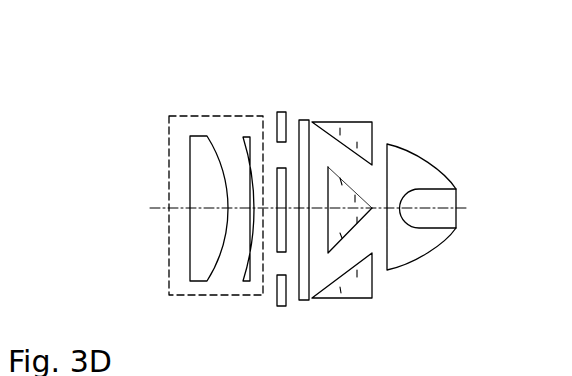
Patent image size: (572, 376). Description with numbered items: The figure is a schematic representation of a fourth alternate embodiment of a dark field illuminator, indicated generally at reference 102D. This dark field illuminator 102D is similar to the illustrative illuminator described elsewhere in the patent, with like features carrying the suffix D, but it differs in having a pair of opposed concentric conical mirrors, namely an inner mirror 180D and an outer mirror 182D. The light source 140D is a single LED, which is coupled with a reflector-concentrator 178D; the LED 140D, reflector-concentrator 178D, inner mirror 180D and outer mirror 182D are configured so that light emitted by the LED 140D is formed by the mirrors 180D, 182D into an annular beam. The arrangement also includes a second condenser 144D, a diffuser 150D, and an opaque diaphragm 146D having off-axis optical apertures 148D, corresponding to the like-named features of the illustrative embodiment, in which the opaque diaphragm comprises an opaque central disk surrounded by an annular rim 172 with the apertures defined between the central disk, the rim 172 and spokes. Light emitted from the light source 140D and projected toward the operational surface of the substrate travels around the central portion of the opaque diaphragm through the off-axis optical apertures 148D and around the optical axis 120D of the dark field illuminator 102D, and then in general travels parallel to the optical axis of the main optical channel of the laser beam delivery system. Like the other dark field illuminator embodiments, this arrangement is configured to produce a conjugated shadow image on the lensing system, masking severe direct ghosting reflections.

The dark field illuminator 102D is at (120, 149).
The optical axis 120D is at (158, 207).
The second condenser 144D is at (190, 114).
The opaque diaphragm 146D is at (281, 112).
The off-axis optical apertures 148D is at (278, 155).
The diffuser 150D is at (302, 120).
The annular rim 172 is at (315, 375).
The reflector-concentrator 178D is at (438, 168).
The inner mirror 180D is at (345, 182).
The outer mirror 182D is at (363, 122).
The light source 140D is at (445, 202).